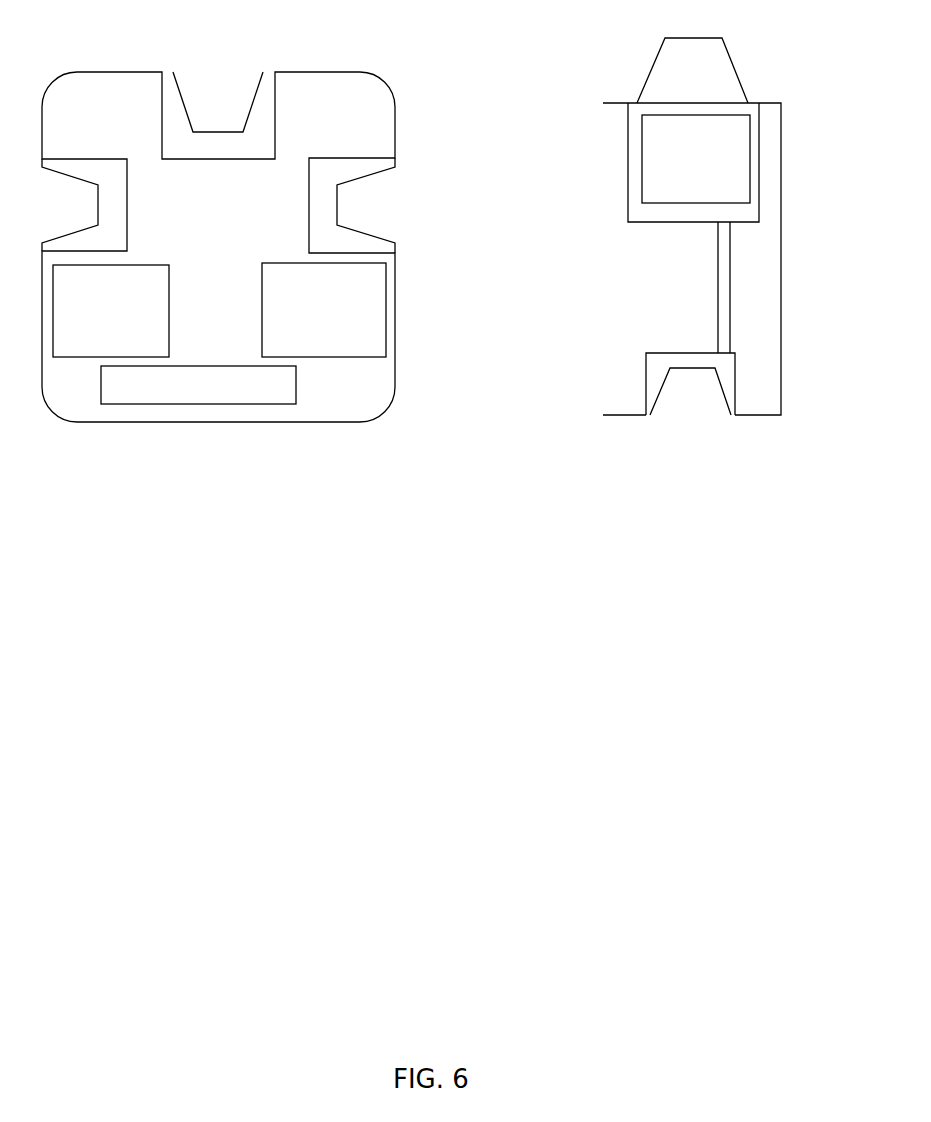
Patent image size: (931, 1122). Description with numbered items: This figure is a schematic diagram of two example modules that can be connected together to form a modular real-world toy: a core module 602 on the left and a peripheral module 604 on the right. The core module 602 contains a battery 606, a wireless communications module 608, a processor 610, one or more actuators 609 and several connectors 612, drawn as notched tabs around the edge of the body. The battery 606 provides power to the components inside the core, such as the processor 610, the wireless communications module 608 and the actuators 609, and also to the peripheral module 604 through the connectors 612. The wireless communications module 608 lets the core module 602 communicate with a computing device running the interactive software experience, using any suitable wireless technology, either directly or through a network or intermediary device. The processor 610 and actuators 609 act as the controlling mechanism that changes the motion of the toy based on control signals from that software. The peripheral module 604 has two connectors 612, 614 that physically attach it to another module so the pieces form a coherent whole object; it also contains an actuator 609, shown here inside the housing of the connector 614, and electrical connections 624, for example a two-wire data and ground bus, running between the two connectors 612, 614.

The core module 602 is at (99, 114).
The peripheral module 604 is at (671, 259).
The battery 606 is at (109, 347).
The wireless communications module 608 is at (314, 352).
The actuator 609 is at (286, 396).
The processor 610 is at (286, 247).
The connector 612 is at (367, 158).
The connector 614 is at (726, 84).
The electrical connections 624 is at (718, 284).